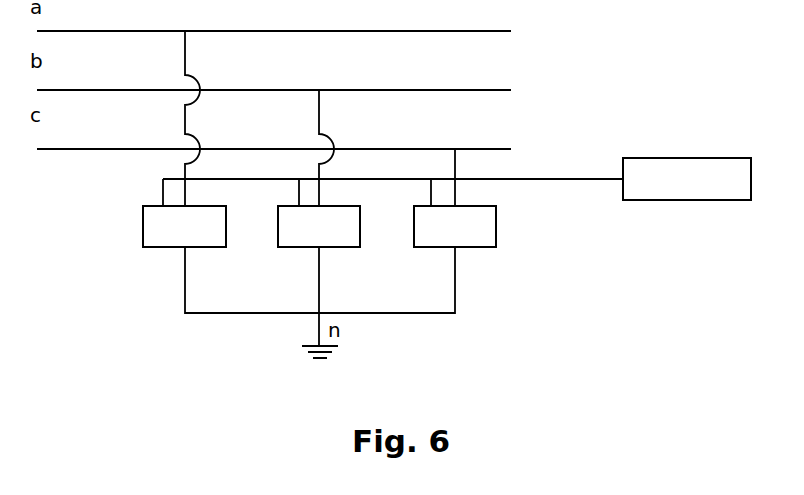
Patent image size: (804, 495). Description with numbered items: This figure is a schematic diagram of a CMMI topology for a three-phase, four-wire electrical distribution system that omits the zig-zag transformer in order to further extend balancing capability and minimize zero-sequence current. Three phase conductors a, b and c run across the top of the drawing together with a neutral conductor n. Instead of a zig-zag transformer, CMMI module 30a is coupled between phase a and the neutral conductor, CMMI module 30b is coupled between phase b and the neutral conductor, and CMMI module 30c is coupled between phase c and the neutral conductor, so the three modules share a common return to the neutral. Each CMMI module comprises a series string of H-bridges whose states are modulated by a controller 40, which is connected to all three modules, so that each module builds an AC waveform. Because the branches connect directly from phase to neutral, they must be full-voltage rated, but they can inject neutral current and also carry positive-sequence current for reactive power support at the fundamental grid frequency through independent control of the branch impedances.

The CMMI module 30a is at (172, 266).
The CMMI module 30b is at (308, 266).
The CMMI module 30c is at (440, 266).
The controller 40 is at (696, 214).